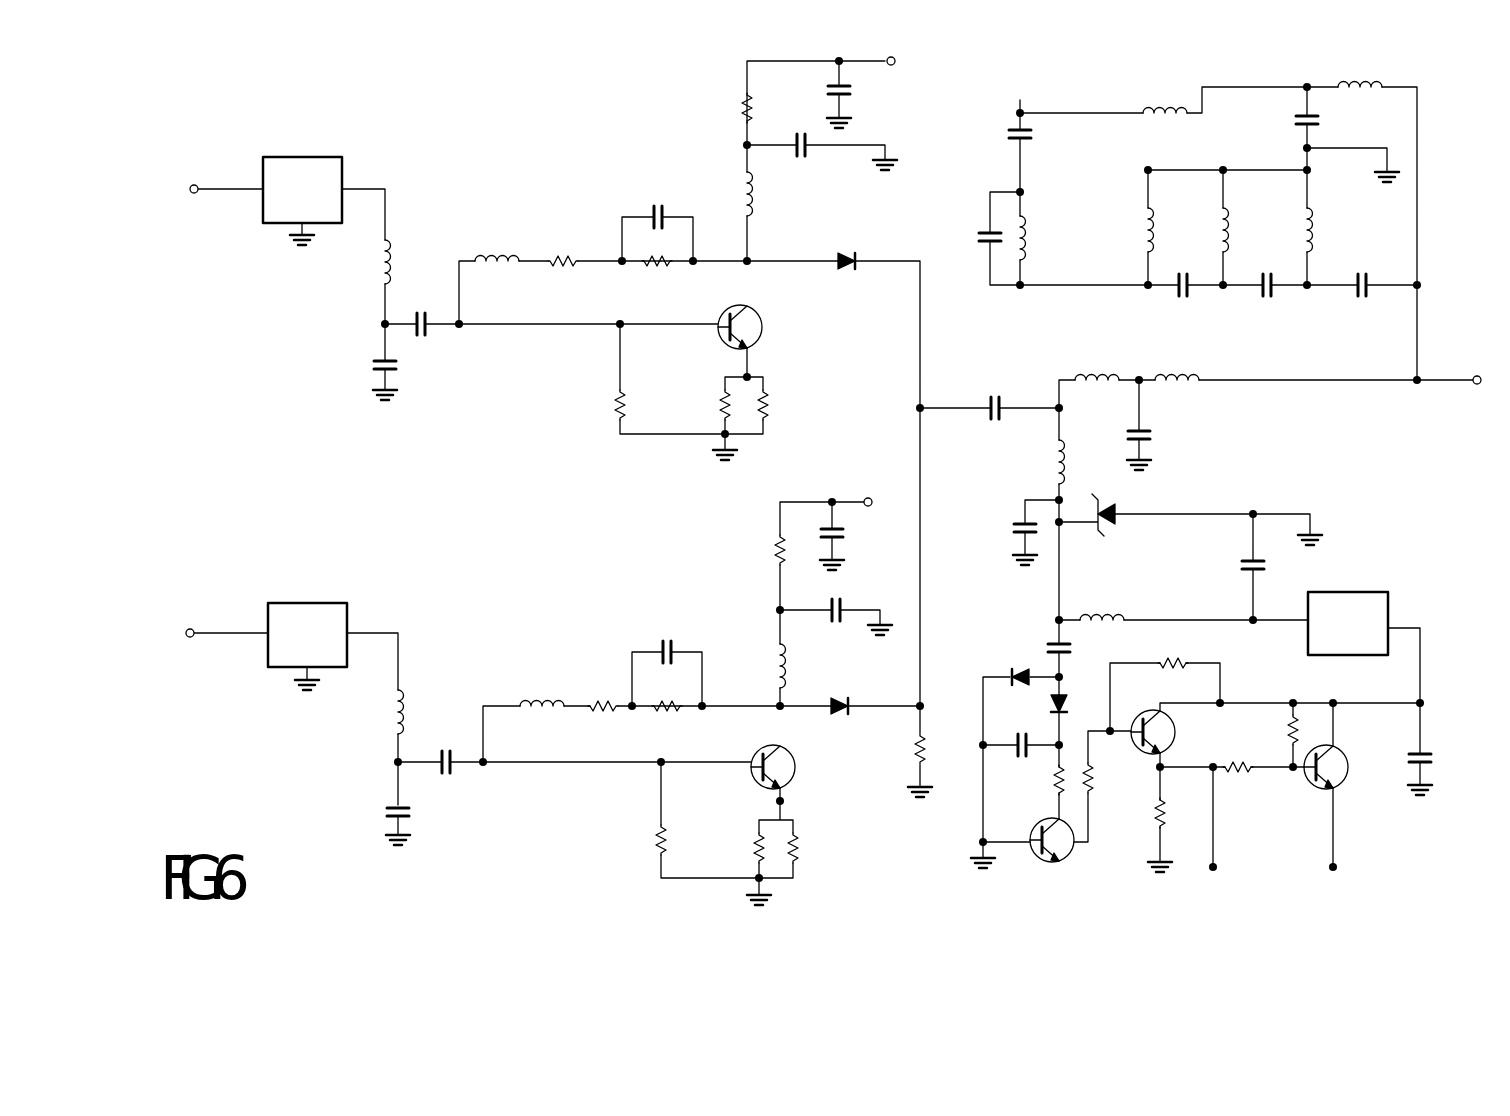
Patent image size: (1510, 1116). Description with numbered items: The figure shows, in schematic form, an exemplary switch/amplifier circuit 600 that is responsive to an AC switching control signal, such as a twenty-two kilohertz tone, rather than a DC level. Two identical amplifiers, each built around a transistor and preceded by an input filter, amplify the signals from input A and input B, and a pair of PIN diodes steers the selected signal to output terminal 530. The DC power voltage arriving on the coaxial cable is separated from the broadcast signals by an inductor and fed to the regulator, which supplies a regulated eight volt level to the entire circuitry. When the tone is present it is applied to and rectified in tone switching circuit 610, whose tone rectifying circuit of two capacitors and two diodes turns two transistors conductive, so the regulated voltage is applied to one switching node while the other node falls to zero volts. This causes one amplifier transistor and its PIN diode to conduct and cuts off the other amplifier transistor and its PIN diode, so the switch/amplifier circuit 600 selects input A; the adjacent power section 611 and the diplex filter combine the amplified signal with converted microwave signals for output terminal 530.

The output terminal 530 is at (1460, 400).
The switch/amplifier circuit 600 is at (826, 489).
The tone switching circuit 610 is at (1107, 903).
The power supply circuit 611 is at (984, 643).